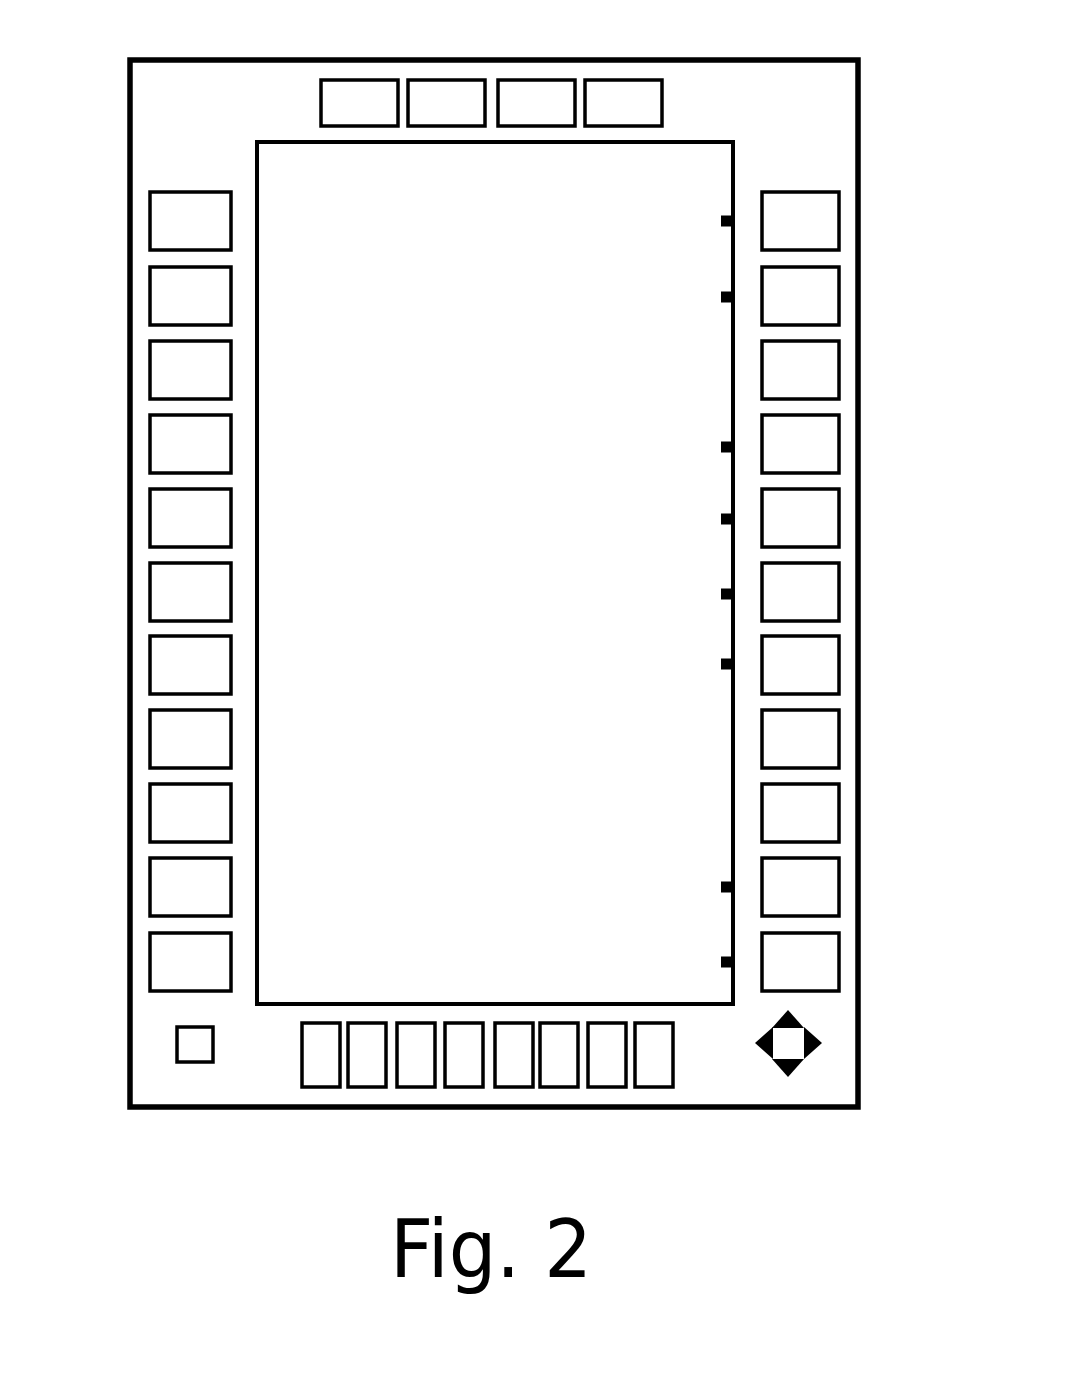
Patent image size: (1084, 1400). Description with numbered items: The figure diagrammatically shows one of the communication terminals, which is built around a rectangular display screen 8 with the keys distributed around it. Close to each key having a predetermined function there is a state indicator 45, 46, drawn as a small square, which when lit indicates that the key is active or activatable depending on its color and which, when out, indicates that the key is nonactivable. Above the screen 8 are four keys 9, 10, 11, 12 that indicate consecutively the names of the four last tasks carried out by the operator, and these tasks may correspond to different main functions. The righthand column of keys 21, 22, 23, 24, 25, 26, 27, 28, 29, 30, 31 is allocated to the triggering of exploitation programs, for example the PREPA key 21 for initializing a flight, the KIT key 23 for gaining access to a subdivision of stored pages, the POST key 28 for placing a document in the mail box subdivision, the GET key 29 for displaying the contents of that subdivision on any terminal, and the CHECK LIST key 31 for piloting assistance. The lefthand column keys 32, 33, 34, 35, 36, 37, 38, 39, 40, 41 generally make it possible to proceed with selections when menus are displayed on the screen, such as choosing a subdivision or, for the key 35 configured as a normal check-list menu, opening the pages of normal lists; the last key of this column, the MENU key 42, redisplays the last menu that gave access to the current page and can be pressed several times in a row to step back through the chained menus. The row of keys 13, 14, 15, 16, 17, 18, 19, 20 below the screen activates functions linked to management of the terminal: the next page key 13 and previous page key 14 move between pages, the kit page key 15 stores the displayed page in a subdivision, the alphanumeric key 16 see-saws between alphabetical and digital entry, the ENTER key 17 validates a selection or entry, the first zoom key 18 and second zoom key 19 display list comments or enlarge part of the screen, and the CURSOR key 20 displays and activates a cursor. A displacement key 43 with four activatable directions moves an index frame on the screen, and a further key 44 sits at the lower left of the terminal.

The rectangular display screen 8 is at (733, 142).
The key above the screen 9 is at (362, 95).
The key above the screen 10 is at (450, 95).
The key above the screen 11 is at (540, 95).
The key above the screen 12 is at (622, 95).
The NEXT PAGE key 13 is at (322, 1087).
The PREV. PAGE key 14 is at (378, 1087).
The KIT PAGE key 15 is at (427, 1083).
The ALPHA/NUM key 16 is at (473, 1083).
The ENTER key 17 is at (523, 1081).
The ZOOM 1 key 18 is at (575, 1083).
The ZOOM 2 key 19 is at (623, 1083).
The CURSOR key 20 is at (648, 1081).
The PREPA key 21 is at (830, 234).
The righthand column key 22 is at (830, 306).
The KIT key 23 is at (830, 380).
The righthand column key 24 is at (832, 455).
The righthand column key 25 is at (828, 533).
The righthand column key 26 is at (830, 607).
The righthand column key 27 is at (833, 676).
The POST key 28 is at (823, 743).
The GET key 29 is at (823, 818).
The righthand column key 30 is at (833, 898).
The CHECK LIST key 31 is at (827, 970).
The lefthand column key 32 is at (160, 225).
The lefthand column key 33 is at (160, 294).
The lefthand column key 34 is at (160, 369).
The lefthand column key 35 is at (160, 444).
The lefthand column key 36 is at (160, 527).
The lefthand column key 37 is at (160, 599).
The lefthand column key 38 is at (160, 667).
The lefthand column key 39 is at (160, 744).
The lefthand column key 40 is at (160, 824).
The lefthand column key 41 is at (160, 886).
The MENU key 42 is at (160, 969).
The displacement key 43 is at (788, 1081).
The ON/OFF key 44 is at (193, 1063).
The state indicator 45 is at (728, 217).
The state indicator 46 is at (728, 968).